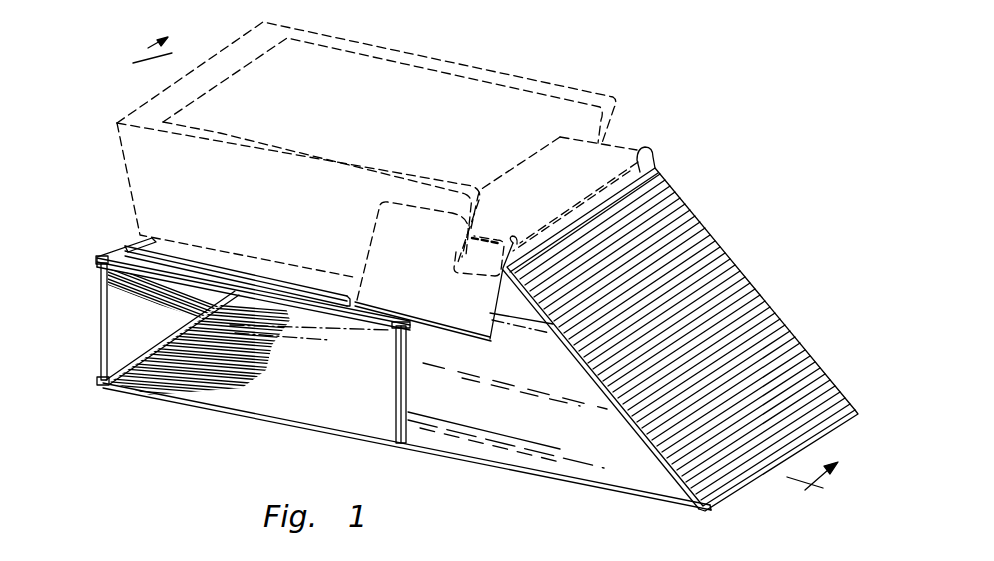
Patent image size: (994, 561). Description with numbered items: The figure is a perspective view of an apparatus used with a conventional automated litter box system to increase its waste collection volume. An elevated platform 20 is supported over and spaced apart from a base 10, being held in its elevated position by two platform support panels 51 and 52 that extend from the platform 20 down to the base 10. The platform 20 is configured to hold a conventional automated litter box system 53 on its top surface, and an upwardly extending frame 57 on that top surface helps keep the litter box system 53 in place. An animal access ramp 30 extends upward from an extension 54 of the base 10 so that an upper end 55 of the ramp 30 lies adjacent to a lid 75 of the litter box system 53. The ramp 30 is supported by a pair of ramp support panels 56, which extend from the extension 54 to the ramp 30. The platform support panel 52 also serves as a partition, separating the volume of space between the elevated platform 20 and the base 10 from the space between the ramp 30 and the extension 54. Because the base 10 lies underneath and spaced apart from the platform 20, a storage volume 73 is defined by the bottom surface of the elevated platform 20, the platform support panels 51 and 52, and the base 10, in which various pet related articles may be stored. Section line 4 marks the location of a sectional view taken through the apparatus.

The section line 4- 4 is at (493, 256).
The base 10 is at (207, 407).
The elevated platform 20 is at (122, 256).
The animal access ramp 30 is at (720, 260).
The platform support panel 51 is at (98, 352).
The platform support panel 52 is at (388, 415).
The automated litter box system 53 is at (515, 73).
The extension 54 is at (587, 488).
The upper end 55 is at (647, 160).
The ramp support panel 56 is at (533, 430).
The upwardly extending frame 57 is at (137, 237).
The storage volume 73 is at (300, 400).
The lid 75 is at (593, 163).